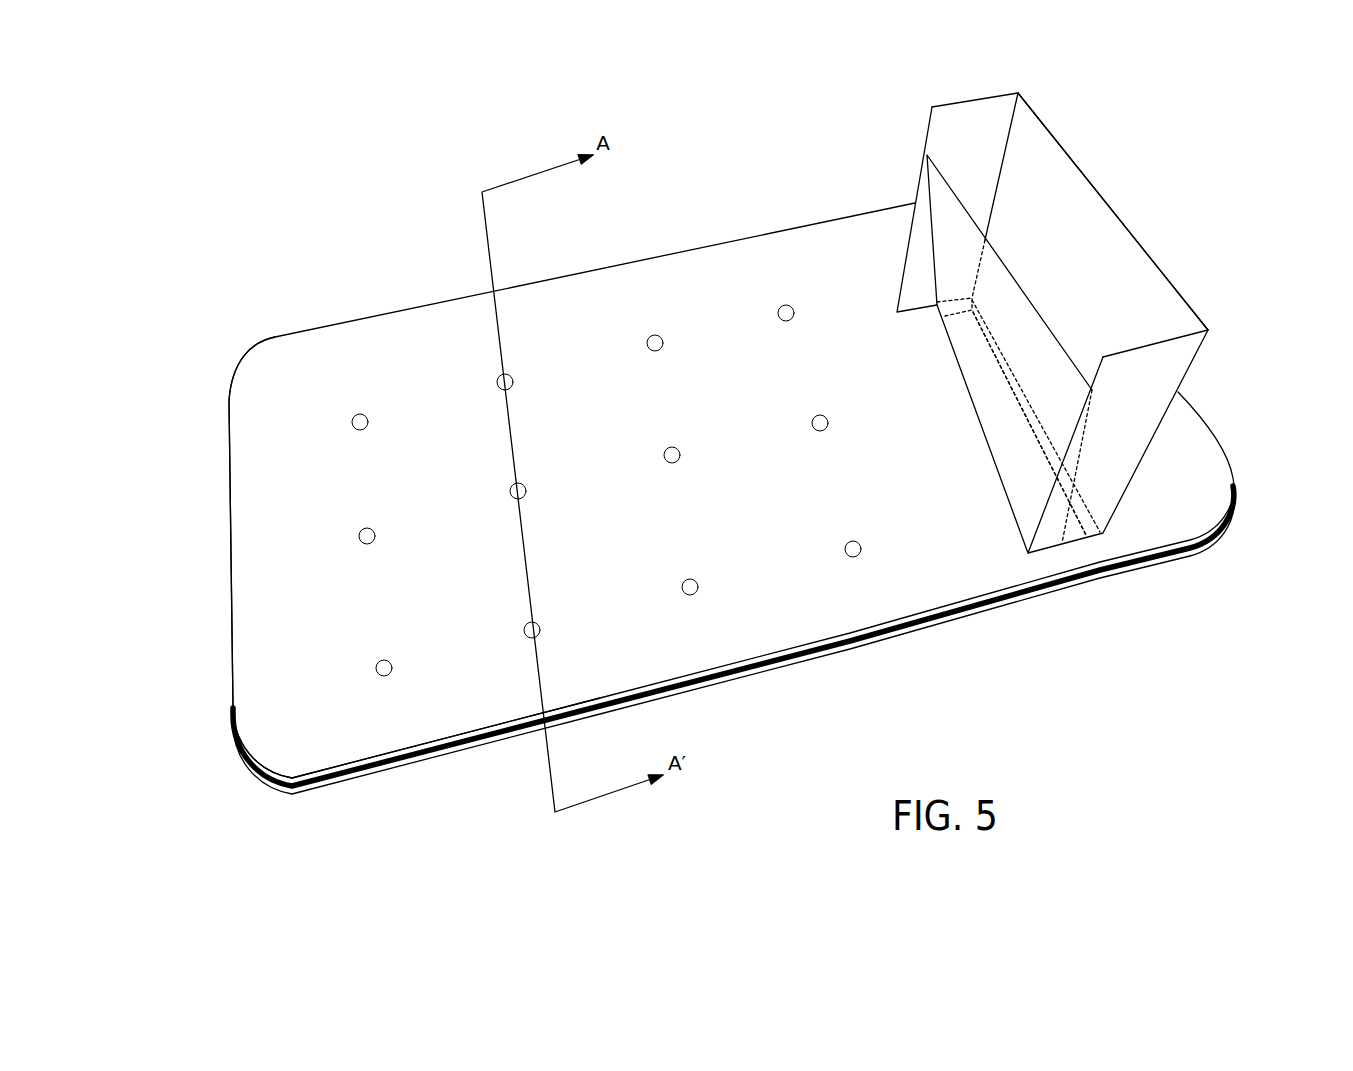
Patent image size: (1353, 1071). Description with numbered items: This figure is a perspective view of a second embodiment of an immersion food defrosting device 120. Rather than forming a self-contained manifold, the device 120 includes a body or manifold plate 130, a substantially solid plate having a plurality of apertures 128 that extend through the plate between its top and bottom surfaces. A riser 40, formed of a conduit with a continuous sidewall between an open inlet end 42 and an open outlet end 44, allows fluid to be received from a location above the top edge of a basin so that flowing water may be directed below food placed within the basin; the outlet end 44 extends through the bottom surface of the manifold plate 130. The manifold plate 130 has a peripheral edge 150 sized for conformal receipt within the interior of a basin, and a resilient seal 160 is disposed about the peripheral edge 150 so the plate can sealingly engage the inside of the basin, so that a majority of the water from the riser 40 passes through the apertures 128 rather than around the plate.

The immersion food defrosting device 120 is at (724, 195).
The apertures 128 is at (540, 624).
The manifold plate 130 is at (438, 708).
The peripheral edge 150 is at (233, 663).
The seal 160 is at (758, 670).
The riser 40 is at (1178, 413).
The open inlet end 42 is at (1046, 270).
The open outlet end 44 is at (1090, 537).